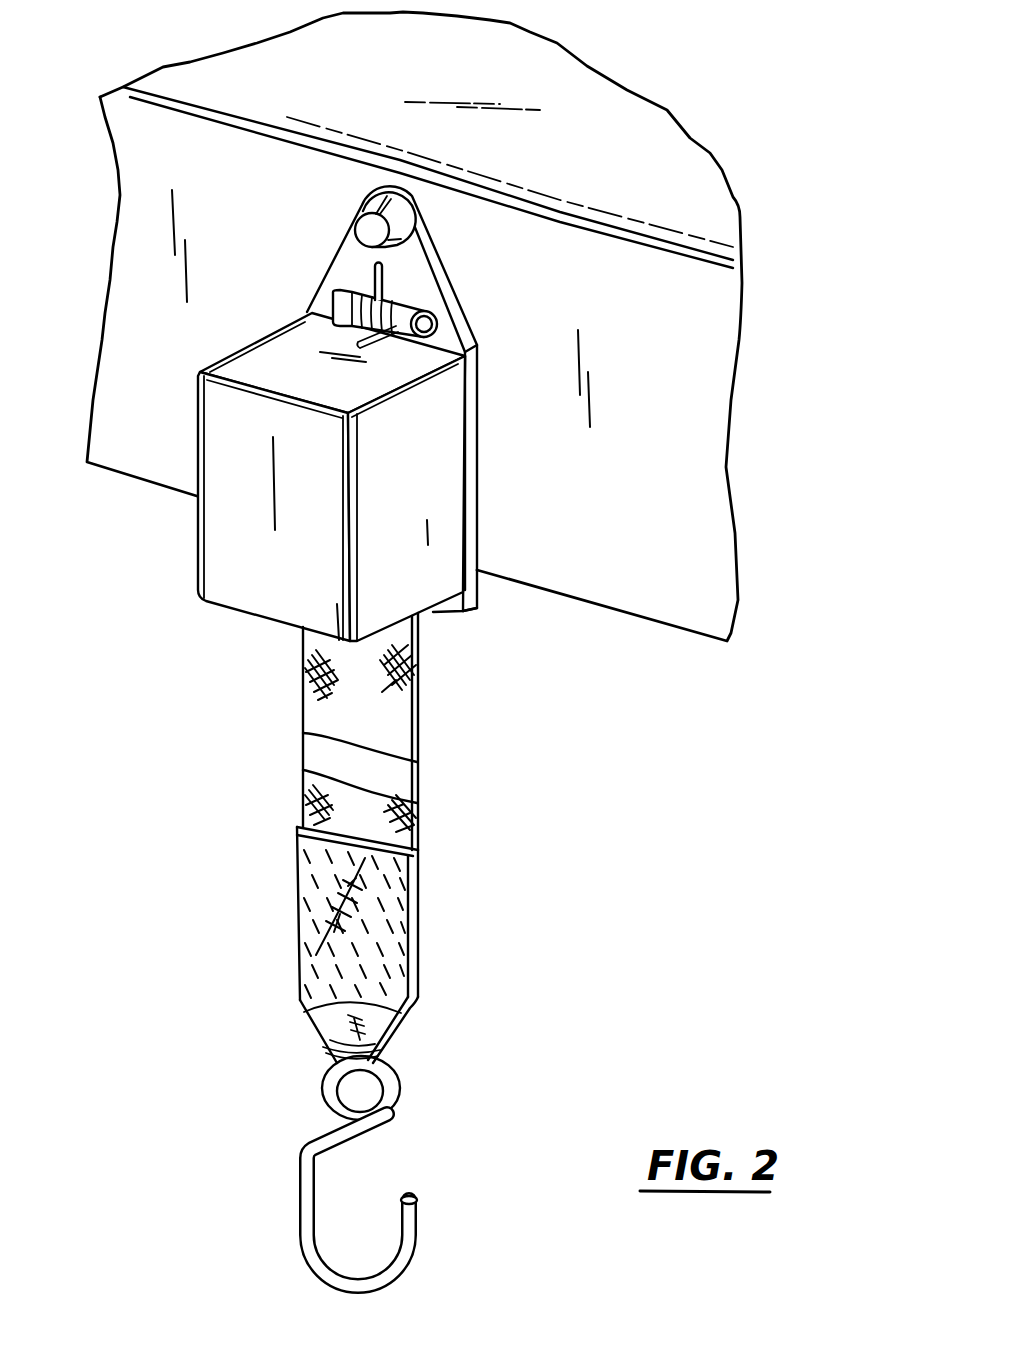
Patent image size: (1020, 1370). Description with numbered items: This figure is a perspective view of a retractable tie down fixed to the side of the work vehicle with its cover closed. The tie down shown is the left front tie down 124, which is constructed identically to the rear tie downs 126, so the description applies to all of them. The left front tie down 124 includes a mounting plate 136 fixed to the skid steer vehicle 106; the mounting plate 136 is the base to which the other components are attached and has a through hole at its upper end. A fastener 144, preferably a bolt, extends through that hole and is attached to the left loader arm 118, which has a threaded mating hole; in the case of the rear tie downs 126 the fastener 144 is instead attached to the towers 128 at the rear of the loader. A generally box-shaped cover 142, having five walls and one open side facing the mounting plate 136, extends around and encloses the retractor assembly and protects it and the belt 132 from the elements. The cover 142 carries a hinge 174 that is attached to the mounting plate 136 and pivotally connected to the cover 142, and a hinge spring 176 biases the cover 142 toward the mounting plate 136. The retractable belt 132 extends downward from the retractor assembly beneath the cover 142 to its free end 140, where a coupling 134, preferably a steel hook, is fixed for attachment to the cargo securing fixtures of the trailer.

The skid steer vehicle 106 is at (699, 199).
The loader arm 118 is at (535, 57).
The tower 128 is at (503, 100).
The left front tie down 124 is at (578, 478).
The rear tie down 126 is at (508, 481).
The mounting plate 136 is at (437, 257).
The fastener 144 is at (355, 231).
The hinge 174 is at (440, 322).
The hinge spring 176 is at (386, 294).
The cover 142 is at (273, 527).
The belt 132 is at (300, 780).
The free end 140 is at (333, 1033).
The coupling 134 is at (297, 1214).